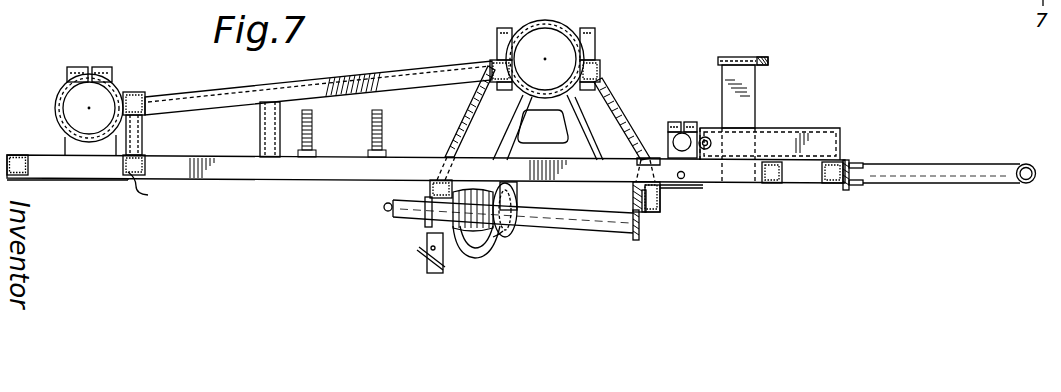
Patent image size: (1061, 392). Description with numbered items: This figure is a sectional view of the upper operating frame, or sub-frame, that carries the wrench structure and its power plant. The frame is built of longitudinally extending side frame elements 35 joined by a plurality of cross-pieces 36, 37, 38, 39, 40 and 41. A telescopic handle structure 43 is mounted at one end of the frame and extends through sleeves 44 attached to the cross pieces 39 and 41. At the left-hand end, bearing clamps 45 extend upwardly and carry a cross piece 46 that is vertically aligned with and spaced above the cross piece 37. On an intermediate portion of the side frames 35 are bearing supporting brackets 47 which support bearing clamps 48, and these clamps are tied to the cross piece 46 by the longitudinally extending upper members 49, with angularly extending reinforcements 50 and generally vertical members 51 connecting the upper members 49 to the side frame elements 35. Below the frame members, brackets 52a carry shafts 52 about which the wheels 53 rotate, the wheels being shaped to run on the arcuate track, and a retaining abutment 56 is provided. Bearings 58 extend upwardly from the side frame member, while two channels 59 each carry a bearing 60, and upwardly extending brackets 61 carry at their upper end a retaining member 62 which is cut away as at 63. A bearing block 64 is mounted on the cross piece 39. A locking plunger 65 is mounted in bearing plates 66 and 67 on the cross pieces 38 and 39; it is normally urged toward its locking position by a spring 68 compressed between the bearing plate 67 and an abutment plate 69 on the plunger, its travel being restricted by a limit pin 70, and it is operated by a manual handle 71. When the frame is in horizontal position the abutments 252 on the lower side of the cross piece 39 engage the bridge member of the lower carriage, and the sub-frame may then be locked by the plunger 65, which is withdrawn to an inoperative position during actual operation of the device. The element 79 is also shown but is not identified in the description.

The side frame element 35 is at (213, 157).
The cross-piece 36 is at (18, 155).
The cross-piece 37 is at (151, 188).
The cross-piece 38 is at (435, 180).
The cross-piece 39 is at (657, 201).
The cross-piece 40 is at (777, 184).
The cross-piece 41 is at (826, 184).
The telescopic handle structure 43 is at (986, 168).
The sleeve 44 is at (648, 158).
The bearing clamp 45 is at (66, 94).
The cross piece 46 is at (135, 92).
The bearing supporting bracket 47 is at (513, 122).
The bearing clamp 48 is at (558, 24).
The upper member 49 is at (357, 76).
The reinforcement 50 is at (466, 106).
The vertical member 51 is at (260, 116).
The shaft 52 is at (511, 240).
The bracket 52a is at (517, 194).
The wheel 53 is at (500, 245).
The retaining abutment 56 is at (419, 252).
The bearing 58 is at (670, 132).
The channel 59 is at (835, 140).
The bearing 60 is at (705, 136).
The bracket 61 is at (756, 96).
The retaining member 62 is at (765, 57).
The cut-away 63 is at (748, 57).
The bearing block 64 is at (632, 191).
The locking plunger 65 is at (581, 224).
The bearing plate 66 is at (636, 242).
The bearing plate 67 is at (452, 190).
The spring 68 is at (462, 258).
The abutment plate 69 is at (477, 252).
The limit pin 70 is at (424, 221).
The manual handle 71 is at (387, 211).
The flange 79 is at (856, 163).
The abutment 252 is at (652, 217).